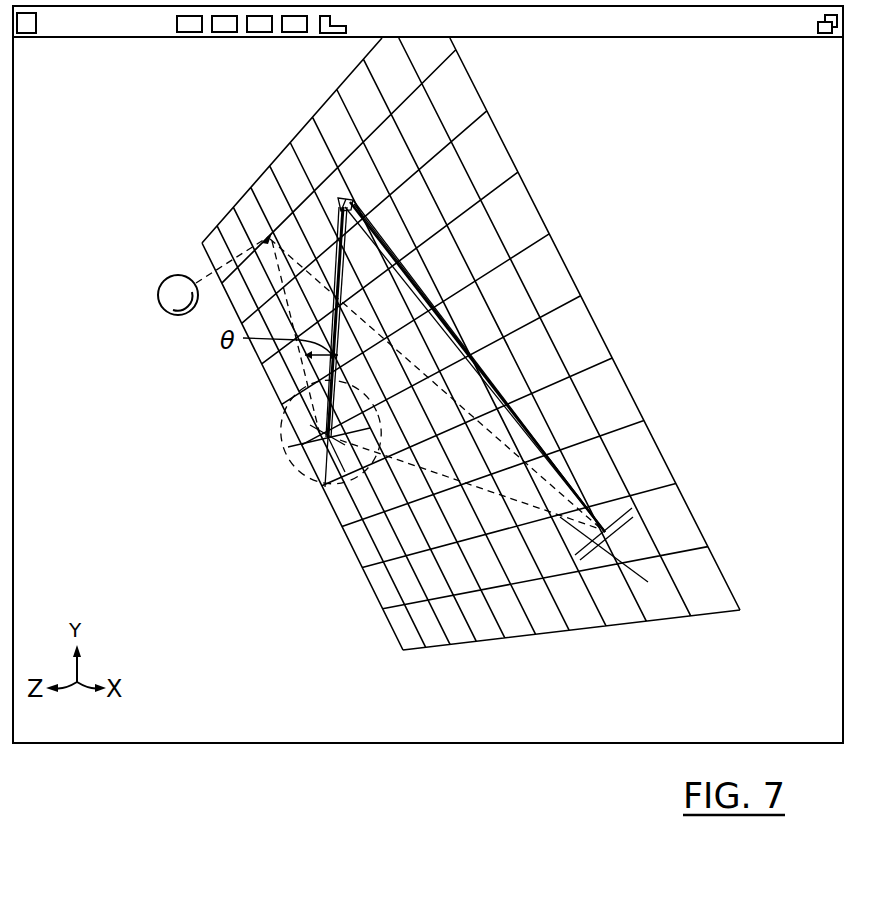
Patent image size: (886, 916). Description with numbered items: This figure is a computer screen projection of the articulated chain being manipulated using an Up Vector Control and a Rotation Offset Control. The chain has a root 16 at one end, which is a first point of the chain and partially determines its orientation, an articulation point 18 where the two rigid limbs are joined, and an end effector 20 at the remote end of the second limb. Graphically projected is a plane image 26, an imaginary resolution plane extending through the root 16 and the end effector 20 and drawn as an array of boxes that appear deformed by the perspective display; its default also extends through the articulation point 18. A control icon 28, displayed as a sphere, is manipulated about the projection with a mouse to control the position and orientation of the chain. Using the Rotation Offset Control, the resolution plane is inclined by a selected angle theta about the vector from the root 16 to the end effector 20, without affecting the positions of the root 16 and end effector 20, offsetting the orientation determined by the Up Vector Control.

The root 16 is at (328, 437).
The articulation point 18 is at (340, 200).
The end effector 20 is at (607, 533).
The plane image 26 is at (598, 327).
The control icon 28 is at (169, 276).